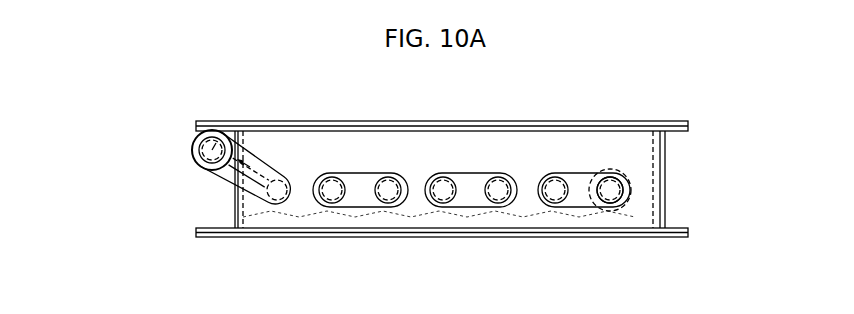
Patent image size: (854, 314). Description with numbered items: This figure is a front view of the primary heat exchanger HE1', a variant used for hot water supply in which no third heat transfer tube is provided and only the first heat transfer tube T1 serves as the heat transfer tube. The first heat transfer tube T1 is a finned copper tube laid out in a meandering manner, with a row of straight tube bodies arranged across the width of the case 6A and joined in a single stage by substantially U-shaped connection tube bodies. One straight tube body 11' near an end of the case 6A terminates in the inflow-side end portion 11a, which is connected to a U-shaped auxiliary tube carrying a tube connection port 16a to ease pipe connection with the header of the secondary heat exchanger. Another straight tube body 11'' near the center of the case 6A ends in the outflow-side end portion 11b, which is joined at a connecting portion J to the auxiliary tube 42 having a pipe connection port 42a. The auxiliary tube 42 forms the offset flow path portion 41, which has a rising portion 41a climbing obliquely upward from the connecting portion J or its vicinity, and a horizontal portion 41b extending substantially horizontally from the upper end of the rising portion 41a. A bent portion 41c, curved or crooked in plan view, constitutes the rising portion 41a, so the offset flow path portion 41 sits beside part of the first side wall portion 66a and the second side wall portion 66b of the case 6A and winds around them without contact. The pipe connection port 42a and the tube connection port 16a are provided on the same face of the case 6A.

The case 6A is at (537, 120).
The first heat transfer tube T1 is at (388, 216).
The straight tube body 11' is at (596, 224).
The inflow-side end portion 11a is at (619, 208).
The tube connection port 16a is at (628, 177).
The offset flow path portion 41 is at (192, 152).
The auxiliary tube 42 is at (193, 140).
The pipe connection port 42a is at (220, 138).
The rising portion 41a is at (246, 152).
The horizontal portion 41b is at (194, 164).
The bent portion 41c is at (268, 165).
The connecting portion J is at (288, 177).
The first side wall portion 66a is at (368, 150).
The second side wall portion 66b is at (233, 205).
The outflow-side end portion 11b is at (273, 206).
The straight tube body 11'' is at (242, 235).
The primary heat exchanger HE1' is at (116, 63).